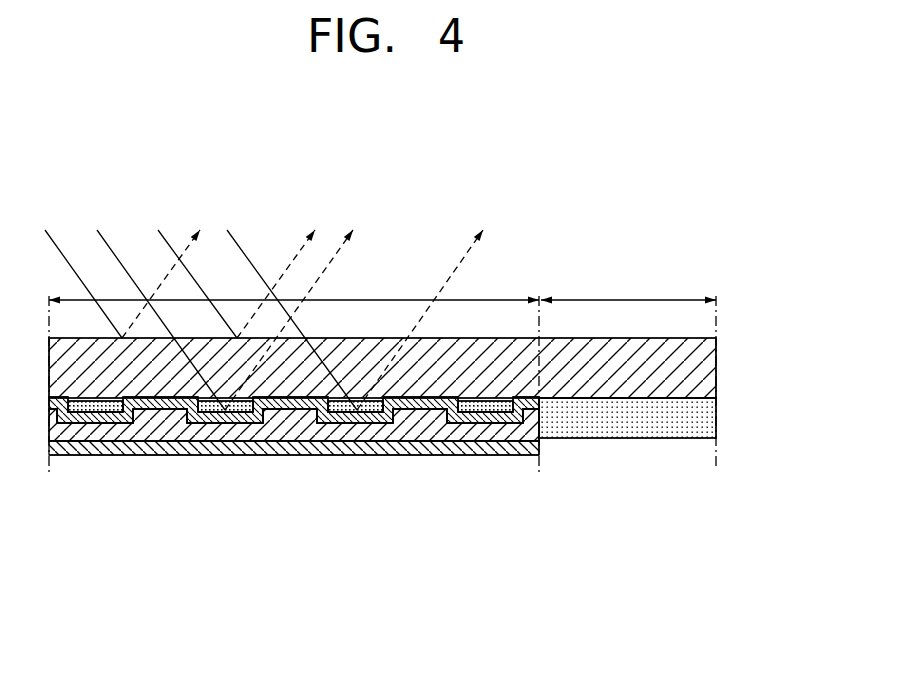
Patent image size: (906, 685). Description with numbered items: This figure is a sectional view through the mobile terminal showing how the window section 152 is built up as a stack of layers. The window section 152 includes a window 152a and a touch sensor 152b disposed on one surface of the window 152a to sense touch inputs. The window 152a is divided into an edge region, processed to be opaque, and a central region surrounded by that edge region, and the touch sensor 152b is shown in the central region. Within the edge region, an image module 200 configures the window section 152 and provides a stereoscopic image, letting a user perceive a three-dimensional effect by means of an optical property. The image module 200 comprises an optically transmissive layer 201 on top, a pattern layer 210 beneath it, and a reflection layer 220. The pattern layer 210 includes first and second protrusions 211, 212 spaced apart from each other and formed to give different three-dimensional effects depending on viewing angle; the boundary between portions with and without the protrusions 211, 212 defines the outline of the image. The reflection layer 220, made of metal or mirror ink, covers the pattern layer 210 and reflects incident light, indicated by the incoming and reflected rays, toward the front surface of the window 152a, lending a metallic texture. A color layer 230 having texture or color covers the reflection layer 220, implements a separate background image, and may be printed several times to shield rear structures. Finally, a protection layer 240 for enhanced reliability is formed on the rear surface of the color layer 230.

The window section 152 is at (421, 386).
The window 152a is at (163, 398).
The touch sensor 152b is at (707, 418).
The image module 200 is at (294, 498).
The optically transmissive layer 201 is at (710, 368).
The pattern layer 210 is at (290, 480).
The first protrusion 211 is at (243, 413).
The second protrusion 212 is at (342, 413).
The reflection layer 220 is at (422, 432).
The color layer 230 is at (490, 443).
The protection layer 240 is at (503, 561).